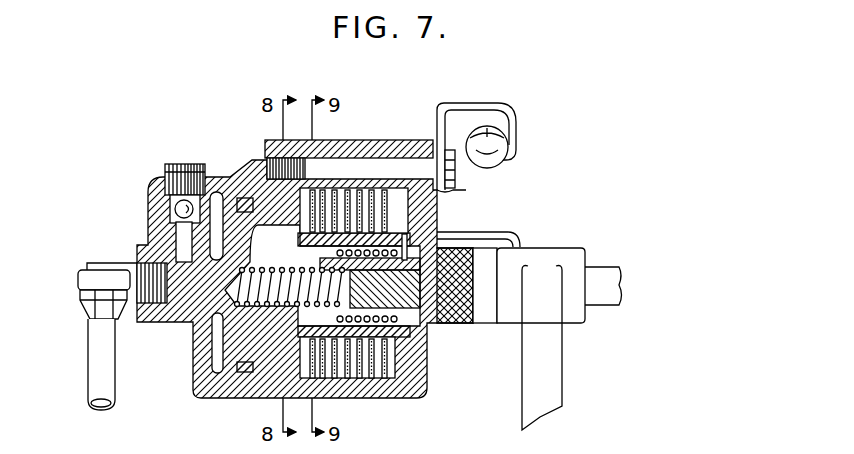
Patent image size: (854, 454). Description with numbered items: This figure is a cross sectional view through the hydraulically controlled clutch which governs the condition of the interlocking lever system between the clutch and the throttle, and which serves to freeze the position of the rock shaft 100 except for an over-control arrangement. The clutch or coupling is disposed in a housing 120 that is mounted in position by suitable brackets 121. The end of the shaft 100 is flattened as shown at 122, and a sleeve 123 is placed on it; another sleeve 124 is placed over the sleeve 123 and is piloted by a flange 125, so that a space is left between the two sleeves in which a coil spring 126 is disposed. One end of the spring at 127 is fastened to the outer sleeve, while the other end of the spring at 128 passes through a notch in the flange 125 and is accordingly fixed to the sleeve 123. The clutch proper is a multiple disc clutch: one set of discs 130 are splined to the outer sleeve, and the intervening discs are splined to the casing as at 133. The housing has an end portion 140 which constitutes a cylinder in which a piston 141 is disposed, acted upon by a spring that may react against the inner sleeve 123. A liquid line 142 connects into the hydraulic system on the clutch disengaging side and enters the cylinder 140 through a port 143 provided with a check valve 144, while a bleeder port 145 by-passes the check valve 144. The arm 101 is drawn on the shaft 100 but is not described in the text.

The rock shaft 100 is at (612, 288).
The drive arm 101 is at (552, 384).
The housing 120 is at (333, 141).
The brackets 121 is at (512, 143).
The flattened end of shaft 122 is at (452, 324).
The sleeve 123 is at (445, 335).
The sleeve 124 is at (410, 386).
The flange 125 is at (318, 320).
The coil spring 126 is at (416, 340).
The end of spring 127 is at (412, 245).
The extending end of spring 128 is at (300, 253).
The set of discs 130 is at (394, 378).
The splines on casing 133 is at (357, 188).
The end portion of housing 140 is at (220, 173).
The piston 141 is at (223, 353).
The liquid line 142 is at (228, 328).
The port 143 is at (180, 248).
The check valve 144 is at (174, 207).
The bleeder port 145 is at (215, 172).